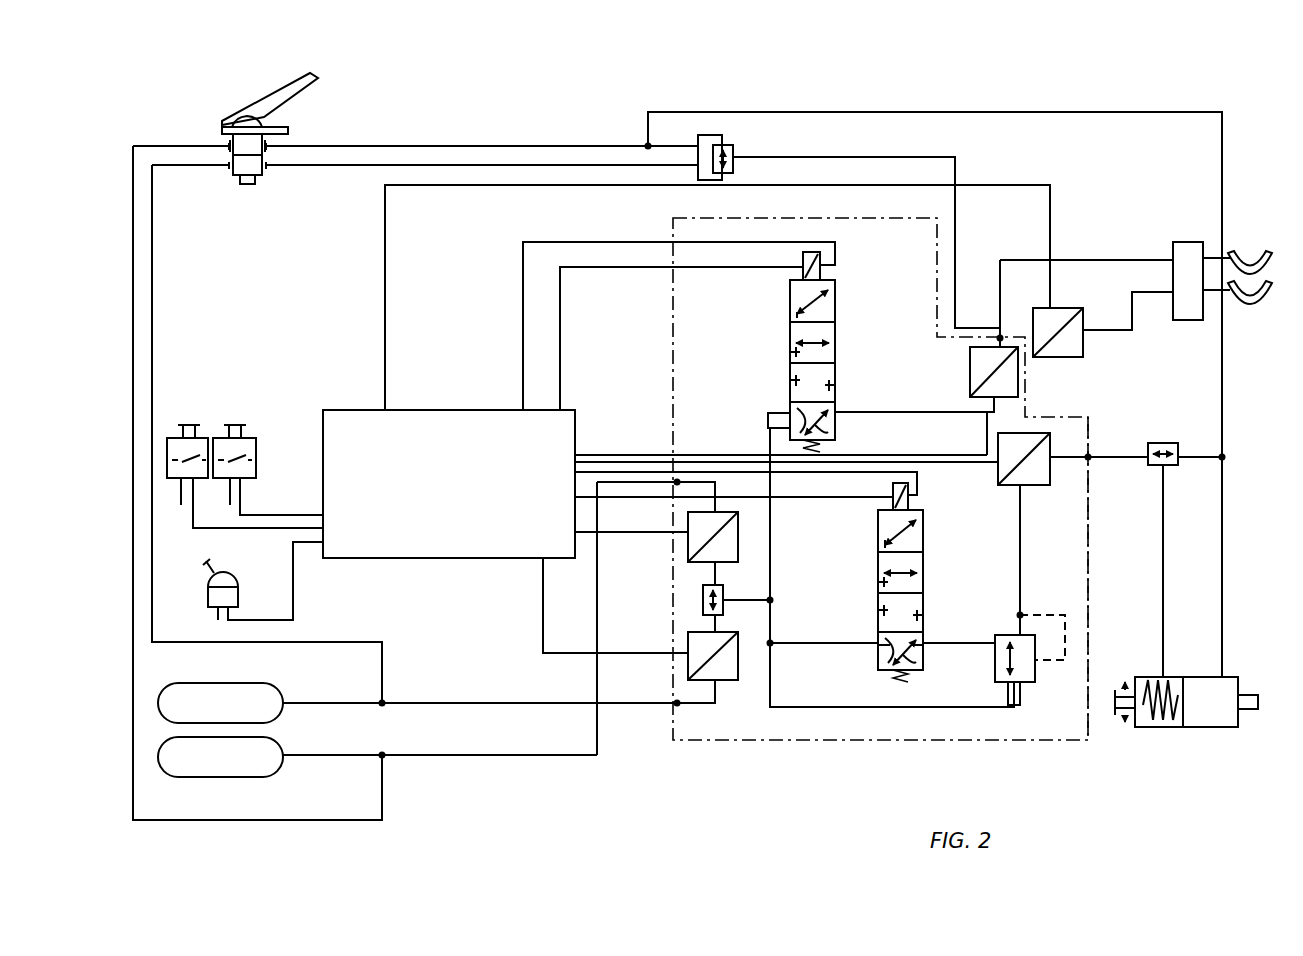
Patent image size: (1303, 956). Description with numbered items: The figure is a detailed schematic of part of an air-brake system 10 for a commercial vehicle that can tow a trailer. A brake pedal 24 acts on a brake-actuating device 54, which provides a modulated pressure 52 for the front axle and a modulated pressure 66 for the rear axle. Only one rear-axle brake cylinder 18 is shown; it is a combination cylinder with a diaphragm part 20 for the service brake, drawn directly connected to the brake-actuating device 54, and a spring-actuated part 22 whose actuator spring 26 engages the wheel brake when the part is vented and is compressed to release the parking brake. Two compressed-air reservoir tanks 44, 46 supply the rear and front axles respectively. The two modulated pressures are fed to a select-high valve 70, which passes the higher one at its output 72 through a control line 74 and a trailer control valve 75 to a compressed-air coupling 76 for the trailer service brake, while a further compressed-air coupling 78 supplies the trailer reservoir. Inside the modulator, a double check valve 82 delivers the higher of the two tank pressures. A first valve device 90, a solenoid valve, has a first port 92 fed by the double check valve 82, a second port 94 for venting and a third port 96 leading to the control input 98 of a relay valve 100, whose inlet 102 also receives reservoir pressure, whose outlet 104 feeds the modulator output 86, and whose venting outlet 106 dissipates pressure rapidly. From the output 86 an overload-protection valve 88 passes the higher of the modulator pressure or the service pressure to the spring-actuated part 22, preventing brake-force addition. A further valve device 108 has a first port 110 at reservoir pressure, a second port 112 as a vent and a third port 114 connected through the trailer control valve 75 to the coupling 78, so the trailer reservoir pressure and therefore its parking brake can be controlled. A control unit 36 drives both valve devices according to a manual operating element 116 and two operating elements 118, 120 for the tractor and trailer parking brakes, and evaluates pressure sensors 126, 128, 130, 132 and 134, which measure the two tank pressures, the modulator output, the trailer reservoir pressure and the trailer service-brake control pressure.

The air-brake system 10 is at (1018, 65).
The brake cylinder 18 is at (1228, 672).
The diaphragm part 20 is at (1215, 727).
The spring-actuated part 22 is at (1162, 722).
The brake pedal 24 is at (310, 78).
The actuator spring 26 is at (1168, 683).
The control unit 36 is at (436, 490).
The first compressed-air reservoir tank 44 is at (272, 767).
The second compressed-air reservoir tank 46 is at (192, 690).
The modulated pressure 52 is at (262, 172).
The brake-actuating device 54 is at (222, 125).
The modulated pressure 66 is at (268, 143).
The select-high valve 70 is at (724, 148).
The output 72 is at (733, 158).
The control line 74 is at (1132, 310).
The trailer control valve 75 is at (1185, 242).
The compressed-air coupling 76 is at (1245, 303).
The compressed-air coupling 78 is at (1248, 262).
The double check valve 82 is at (703, 600).
The modulator output 86 is at (1088, 457).
The overload-protection valve 88 is at (1165, 443).
The first valve device 90 is at (908, 500).
The first port 92 is at (878, 640).
The second port 94 is at (880, 655).
The third port 96 is at (925, 650).
The control input 98 is at (995, 642).
The relay valve 100 is at (1020, 618).
The inlet 102 is at (1028, 682).
The outlet 104 is at (1030, 635).
The venting outlet 106 is at (1008, 703).
The further valve device 108 is at (835, 277).
The first port 110 is at (790, 405).
The second port 112 is at (770, 422).
The third port 114 is at (838, 415).
The manual operating element 116 is at (232, 572).
The operating element 118 is at (190, 425).
The operating element 120 is at (240, 425).
The pressure sensor 126 is at (738, 540).
The pressure sensor 128 is at (738, 672).
The pressure sensor 130 is at (1028, 433).
The pressure sensor 132 is at (970, 372).
The pressure sensor 134 is at (1083, 352).